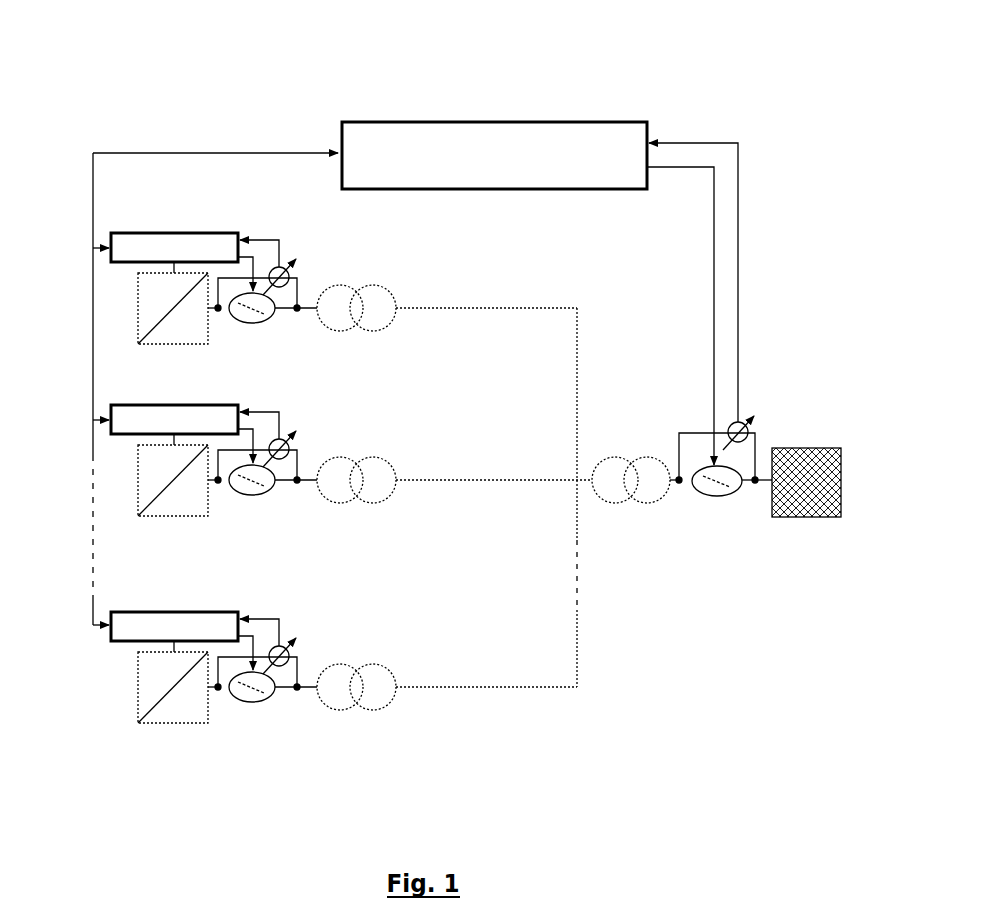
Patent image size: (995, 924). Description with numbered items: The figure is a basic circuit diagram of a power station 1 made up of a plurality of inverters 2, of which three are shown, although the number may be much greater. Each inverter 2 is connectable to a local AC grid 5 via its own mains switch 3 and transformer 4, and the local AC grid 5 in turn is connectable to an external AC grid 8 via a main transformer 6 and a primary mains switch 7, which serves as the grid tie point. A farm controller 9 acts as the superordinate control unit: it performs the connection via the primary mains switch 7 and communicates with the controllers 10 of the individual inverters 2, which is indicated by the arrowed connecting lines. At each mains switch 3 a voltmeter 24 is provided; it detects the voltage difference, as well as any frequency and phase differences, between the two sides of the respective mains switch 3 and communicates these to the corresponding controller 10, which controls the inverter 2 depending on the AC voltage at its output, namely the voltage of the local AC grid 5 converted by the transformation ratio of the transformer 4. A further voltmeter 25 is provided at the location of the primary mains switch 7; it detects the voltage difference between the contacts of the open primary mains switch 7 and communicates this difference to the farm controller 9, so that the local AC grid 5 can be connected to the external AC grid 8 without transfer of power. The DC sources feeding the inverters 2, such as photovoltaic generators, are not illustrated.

The power station 1 is at (711, 98).
The inverter 2 is at (138, 308).
The mains switch 3 is at (258, 326).
The transformer 4 is at (380, 334).
The local AC grid 5 is at (583, 657).
The main transformer 6 is at (676, 506).
The primary mains switch 7 is at (726, 501).
The external AC grid 8 is at (806, 446).
The farm controller 9 is at (578, 120).
The controller 10 is at (195, 230).
The voltmeter 24 is at (295, 266).
The voltmeter 25 is at (756, 426).